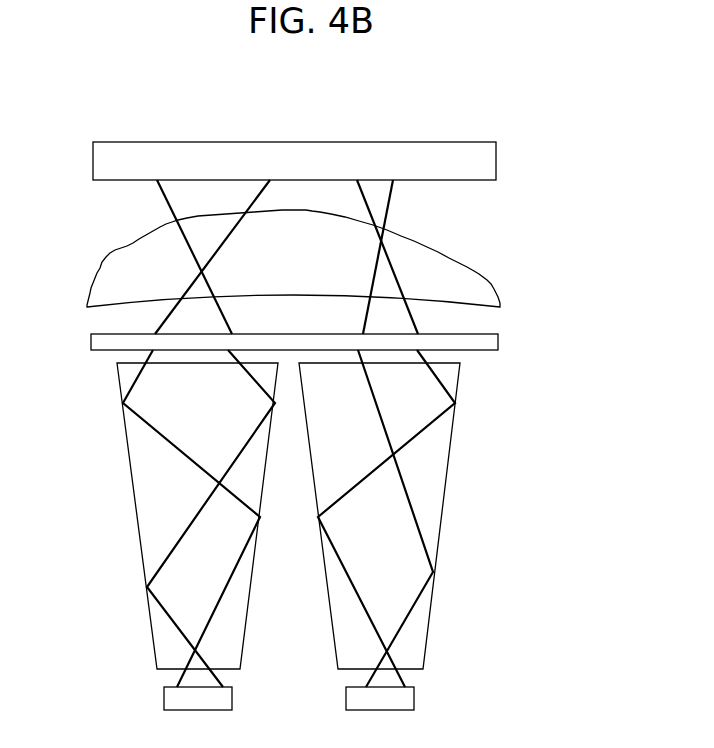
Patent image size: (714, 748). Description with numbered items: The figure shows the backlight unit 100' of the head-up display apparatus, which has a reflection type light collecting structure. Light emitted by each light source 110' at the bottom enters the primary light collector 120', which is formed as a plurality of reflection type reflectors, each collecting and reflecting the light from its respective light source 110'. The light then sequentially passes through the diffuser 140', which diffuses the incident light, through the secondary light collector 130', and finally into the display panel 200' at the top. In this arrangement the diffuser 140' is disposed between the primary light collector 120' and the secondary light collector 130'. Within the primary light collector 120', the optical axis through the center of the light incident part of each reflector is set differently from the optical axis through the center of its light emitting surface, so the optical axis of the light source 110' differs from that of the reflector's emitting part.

The backlight unit 100' is at (304, 392).
The display panel 200' is at (340, 164).
The secondary light collector 130' is at (337, 259).
The diffuser 140' is at (340, 347).
The primary light collector 120' is at (328, 516).
The light source 110' is at (335, 704).